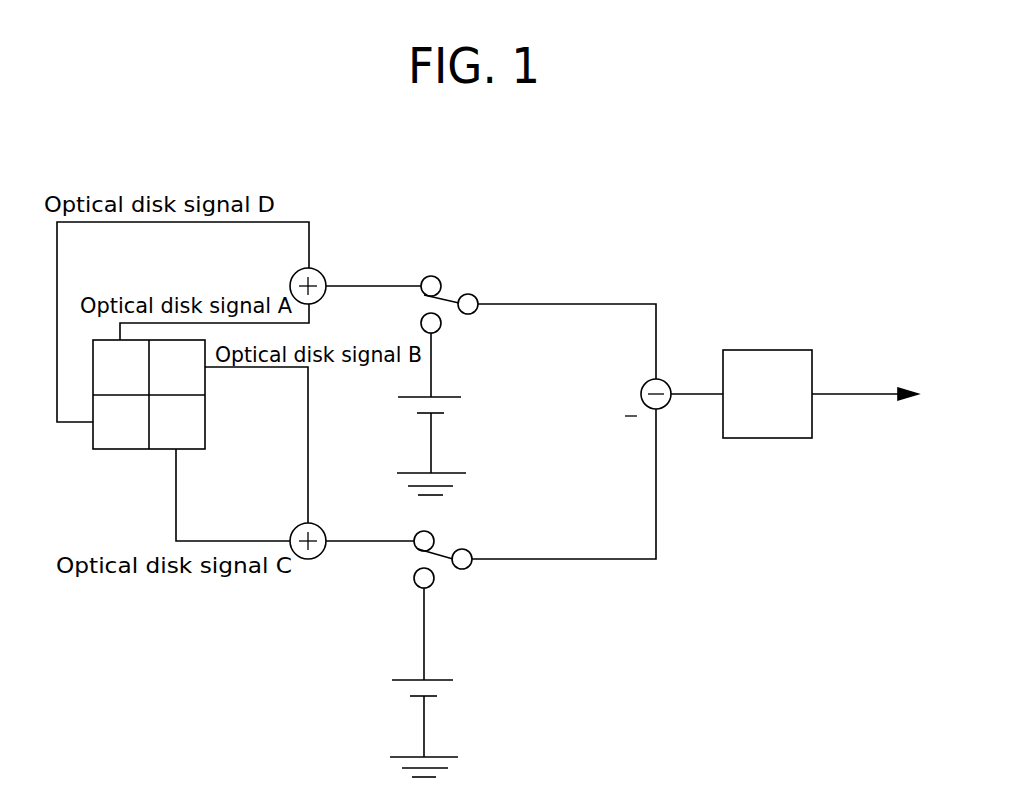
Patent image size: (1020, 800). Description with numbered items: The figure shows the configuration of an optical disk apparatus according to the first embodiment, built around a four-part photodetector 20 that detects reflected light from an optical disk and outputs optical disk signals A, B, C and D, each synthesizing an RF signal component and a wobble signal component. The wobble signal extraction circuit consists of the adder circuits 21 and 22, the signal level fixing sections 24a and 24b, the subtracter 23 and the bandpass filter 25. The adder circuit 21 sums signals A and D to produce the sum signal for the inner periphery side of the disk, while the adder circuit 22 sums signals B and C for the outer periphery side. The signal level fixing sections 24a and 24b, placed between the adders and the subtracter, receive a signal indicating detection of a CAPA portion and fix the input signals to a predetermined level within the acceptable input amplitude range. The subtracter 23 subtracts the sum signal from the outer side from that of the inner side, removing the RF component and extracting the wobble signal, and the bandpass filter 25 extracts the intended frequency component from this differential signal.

The photodetector 20 is at (130, 449).
The adder circuit 21 is at (320, 268).
The adder circuit 22 is at (306, 560).
The subtracter 23 is at (665, 381).
The signal level fixing section 24a is at (488, 425).
The signal level fixing section 24b is at (487, 665).
The bandpass filter 25 is at (768, 438).